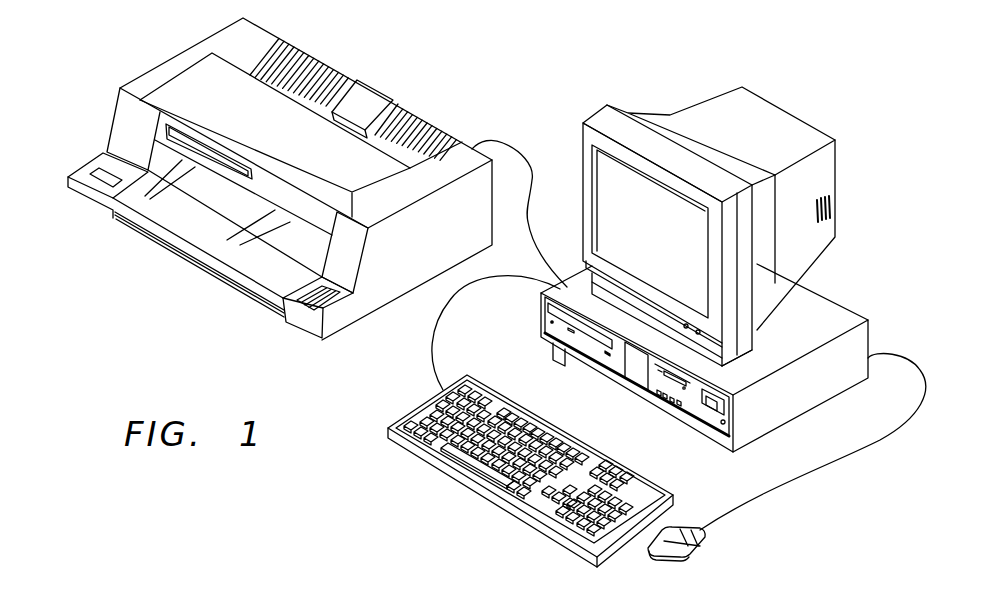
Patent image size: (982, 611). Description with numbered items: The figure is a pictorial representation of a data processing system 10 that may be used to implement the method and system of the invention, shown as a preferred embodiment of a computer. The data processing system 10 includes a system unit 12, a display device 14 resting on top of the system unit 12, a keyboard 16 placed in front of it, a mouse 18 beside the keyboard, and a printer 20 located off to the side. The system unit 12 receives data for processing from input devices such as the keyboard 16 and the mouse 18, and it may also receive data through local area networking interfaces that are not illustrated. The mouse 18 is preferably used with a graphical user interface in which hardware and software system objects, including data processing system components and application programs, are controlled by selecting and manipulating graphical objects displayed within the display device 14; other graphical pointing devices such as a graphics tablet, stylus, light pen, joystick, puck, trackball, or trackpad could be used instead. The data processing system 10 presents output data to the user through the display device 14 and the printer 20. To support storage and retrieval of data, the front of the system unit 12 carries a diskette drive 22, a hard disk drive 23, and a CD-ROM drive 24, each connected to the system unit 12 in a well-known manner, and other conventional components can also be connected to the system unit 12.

The data processing system 10 is at (495, 69).
The system unit 12 is at (853, 297).
The display device 14 is at (784, 95).
The keyboard 16 is at (376, 427).
The mouse 18 is at (654, 562).
The printer 20 is at (172, 302).
The diskette drive 22 is at (667, 372).
The hard disk drive 23 is at (630, 352).
The CD-ROM drive 24 is at (588, 336).